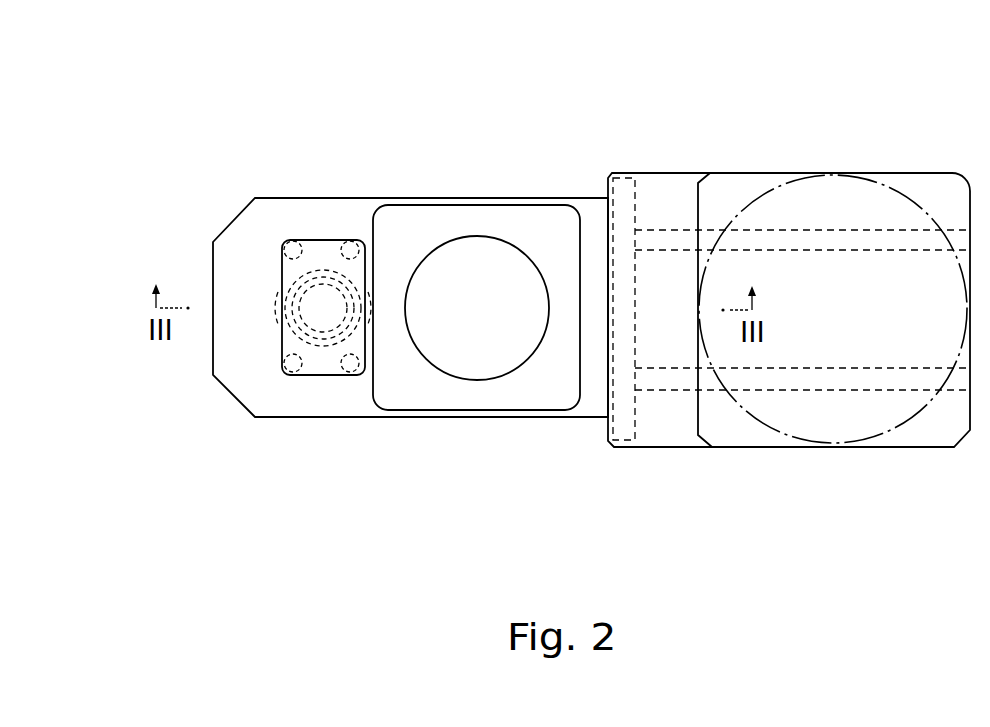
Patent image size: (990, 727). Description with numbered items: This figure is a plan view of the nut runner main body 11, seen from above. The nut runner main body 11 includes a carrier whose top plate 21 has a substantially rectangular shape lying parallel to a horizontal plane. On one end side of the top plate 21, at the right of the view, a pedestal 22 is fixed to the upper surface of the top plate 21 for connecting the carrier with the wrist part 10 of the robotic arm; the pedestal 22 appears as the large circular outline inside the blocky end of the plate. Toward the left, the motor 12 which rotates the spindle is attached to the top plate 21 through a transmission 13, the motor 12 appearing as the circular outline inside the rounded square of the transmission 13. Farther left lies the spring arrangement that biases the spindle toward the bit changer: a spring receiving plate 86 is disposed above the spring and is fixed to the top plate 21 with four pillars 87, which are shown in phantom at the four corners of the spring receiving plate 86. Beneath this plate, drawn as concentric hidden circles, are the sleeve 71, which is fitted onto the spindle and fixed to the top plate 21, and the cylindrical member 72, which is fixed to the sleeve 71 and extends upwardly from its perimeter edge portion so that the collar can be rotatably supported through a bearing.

The wrist part 10 is at (922, 208).
The nut runner main body 11 is at (696, 114).
The motor 12 is at (480, 287).
The transmission 13 is at (425, 230).
The top plate 21 is at (245, 232).
The pedestal 22 is at (837, 198).
The sleeve 71 is at (270, 310).
The cylindrical member 72 is at (323, 308).
The spring receiving plate 86 is at (325, 372).
The pillars 87 is at (294, 242).